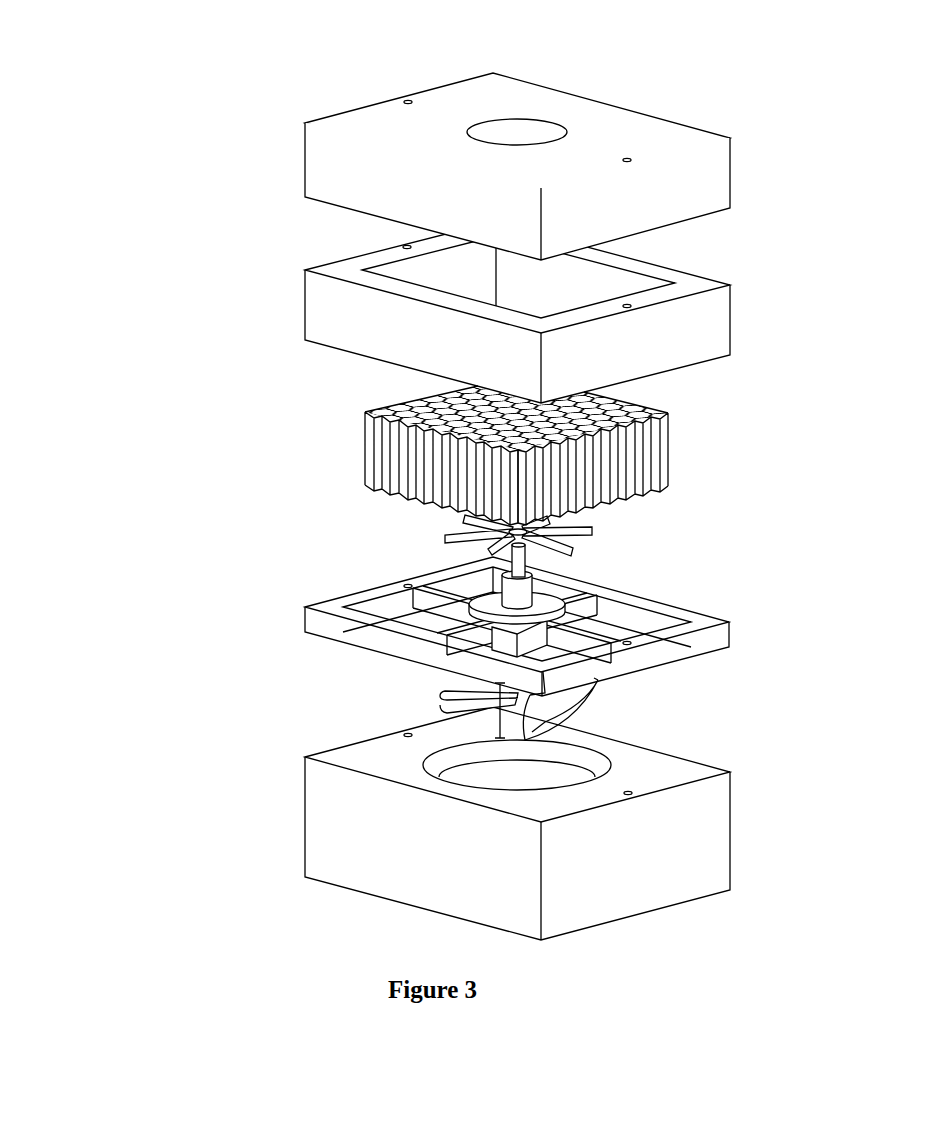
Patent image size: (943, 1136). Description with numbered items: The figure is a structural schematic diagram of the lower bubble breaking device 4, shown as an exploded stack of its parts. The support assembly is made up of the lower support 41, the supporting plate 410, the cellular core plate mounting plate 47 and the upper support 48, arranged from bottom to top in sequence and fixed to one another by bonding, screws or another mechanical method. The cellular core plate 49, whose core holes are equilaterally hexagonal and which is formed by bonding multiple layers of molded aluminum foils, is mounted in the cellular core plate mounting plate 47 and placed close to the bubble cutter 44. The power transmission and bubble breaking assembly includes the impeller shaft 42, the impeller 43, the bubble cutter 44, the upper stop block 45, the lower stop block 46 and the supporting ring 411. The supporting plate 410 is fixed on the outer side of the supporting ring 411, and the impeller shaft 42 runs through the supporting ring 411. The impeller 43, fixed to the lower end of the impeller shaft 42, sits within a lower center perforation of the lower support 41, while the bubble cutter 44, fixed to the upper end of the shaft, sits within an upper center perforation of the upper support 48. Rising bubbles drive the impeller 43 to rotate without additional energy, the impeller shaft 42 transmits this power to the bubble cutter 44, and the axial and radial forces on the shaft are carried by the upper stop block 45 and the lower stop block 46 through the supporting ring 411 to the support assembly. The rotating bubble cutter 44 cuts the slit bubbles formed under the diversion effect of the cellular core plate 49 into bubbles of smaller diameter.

The lower bubble breaking device 4 is at (192, 195).
The lower support 41 is at (642, 912).
The impeller shaft 42 is at (508, 533).
The impeller 43 is at (580, 715).
The bubble cutter 44 is at (510, 558).
The upper stop block 45 is at (522, 590).
The lower stop block 46 is at (500, 740).
The cellular core plate mounting plate 47 is at (305, 308).
The upper support 48 is at (397, 98).
The cellular core plate 49 is at (378, 420).
The supporting plate 410 is at (305, 620).
The supporting ring 411 is at (547, 637).